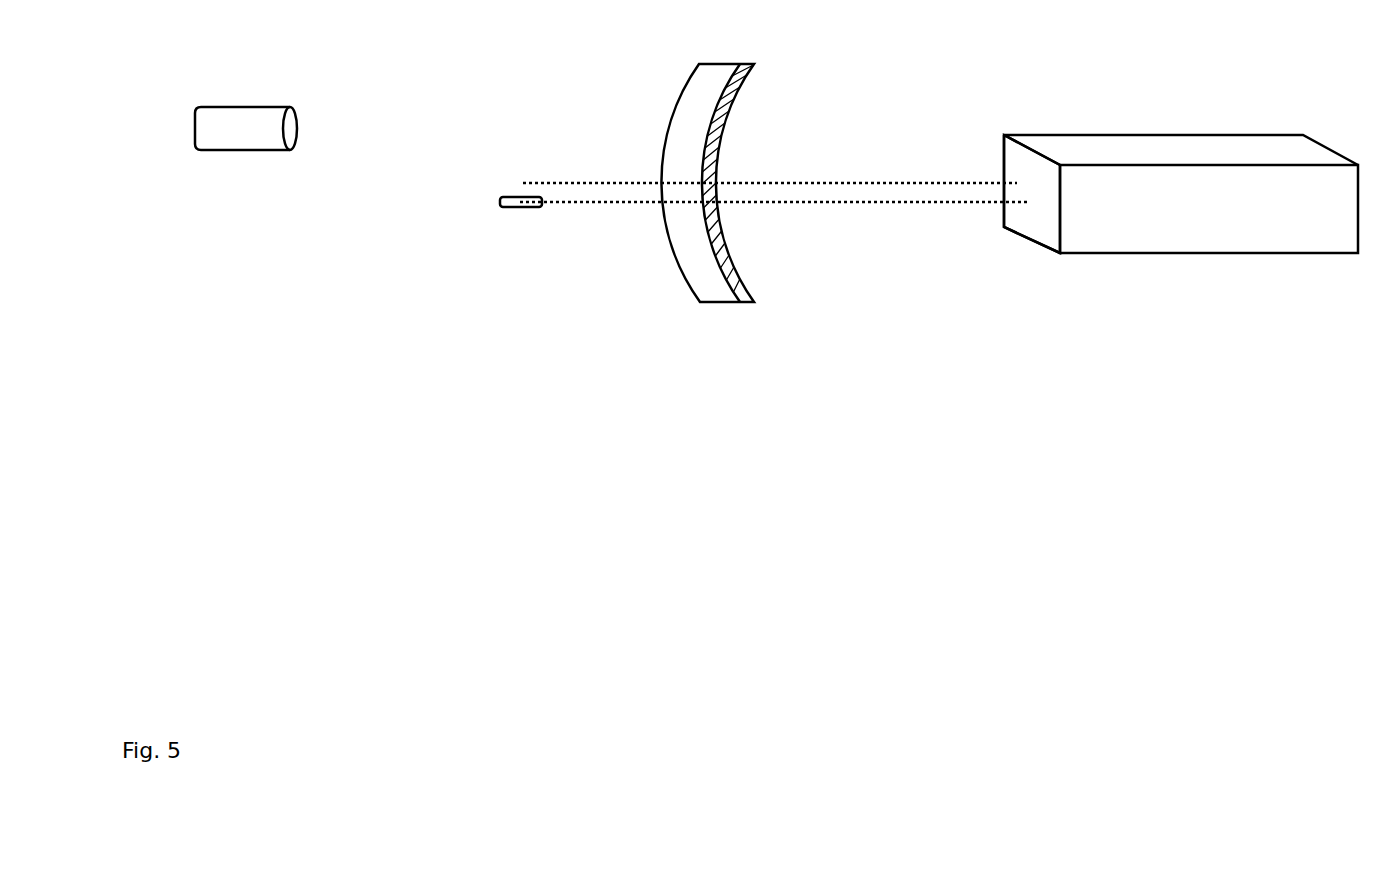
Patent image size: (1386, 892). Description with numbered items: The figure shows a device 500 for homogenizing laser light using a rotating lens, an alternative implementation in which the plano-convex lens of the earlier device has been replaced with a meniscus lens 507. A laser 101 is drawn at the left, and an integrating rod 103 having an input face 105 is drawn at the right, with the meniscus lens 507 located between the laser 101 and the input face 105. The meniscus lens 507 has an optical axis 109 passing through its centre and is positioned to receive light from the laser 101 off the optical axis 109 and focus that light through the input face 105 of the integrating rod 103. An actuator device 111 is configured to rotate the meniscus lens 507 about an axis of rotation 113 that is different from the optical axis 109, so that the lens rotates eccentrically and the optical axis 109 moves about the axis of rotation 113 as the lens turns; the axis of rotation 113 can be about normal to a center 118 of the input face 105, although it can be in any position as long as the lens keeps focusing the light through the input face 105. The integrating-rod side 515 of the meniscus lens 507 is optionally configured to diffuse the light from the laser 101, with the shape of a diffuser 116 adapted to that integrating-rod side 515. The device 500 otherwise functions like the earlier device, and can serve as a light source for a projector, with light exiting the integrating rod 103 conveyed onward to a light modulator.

The device 500 is at (323, 338).
The laser 101 is at (268, 149).
The integrating rod 103 is at (1228, 248).
The input face 105 is at (1053, 238).
The optical axis 109 is at (523, 183).
The actuator device 111 is at (535, 205).
The axis of rotation 113 is at (642, 202).
The diffuser 116 is at (750, 295).
The center of input face 118 is at (1028, 201).
The meniscus lens 507 is at (723, 189).
The integrating-rod side 515 is at (746, 90).